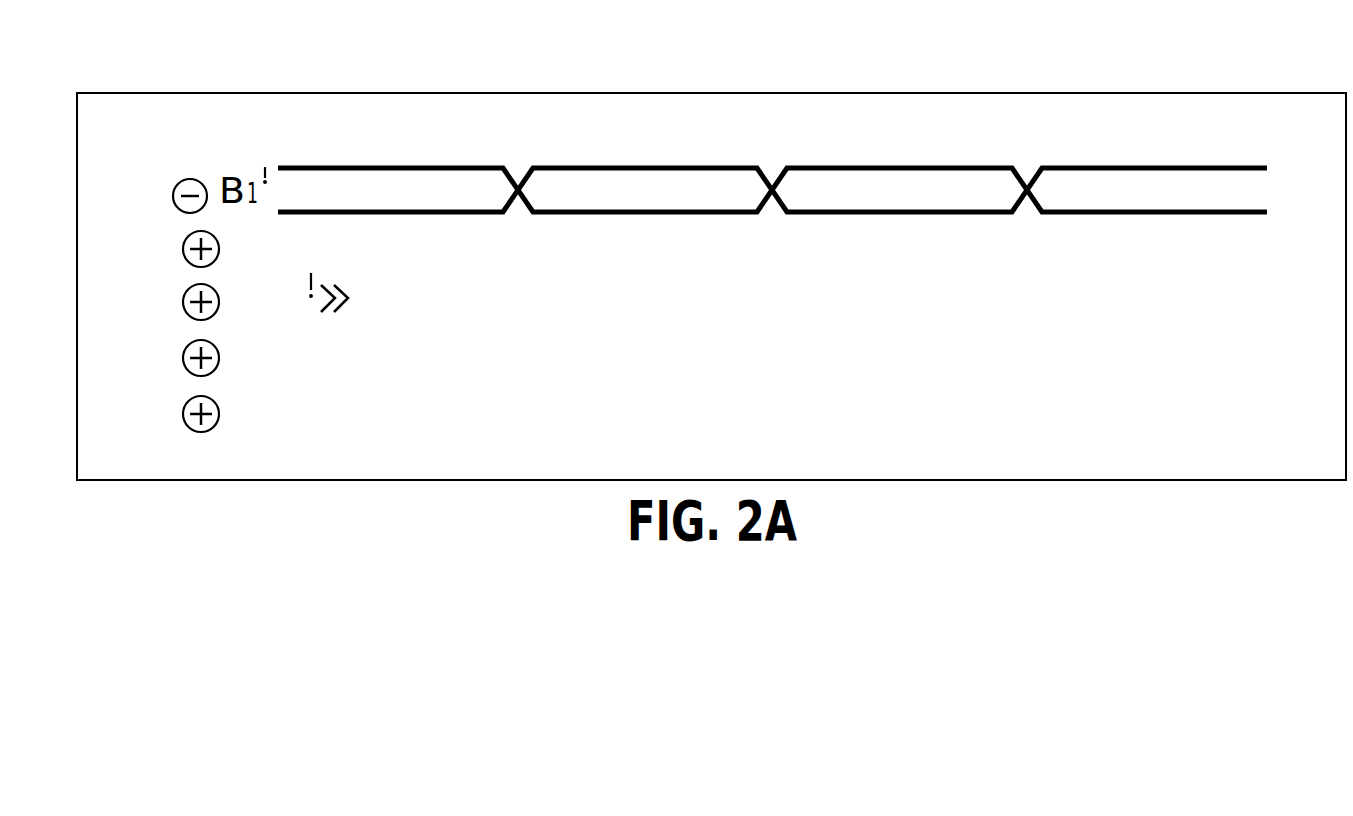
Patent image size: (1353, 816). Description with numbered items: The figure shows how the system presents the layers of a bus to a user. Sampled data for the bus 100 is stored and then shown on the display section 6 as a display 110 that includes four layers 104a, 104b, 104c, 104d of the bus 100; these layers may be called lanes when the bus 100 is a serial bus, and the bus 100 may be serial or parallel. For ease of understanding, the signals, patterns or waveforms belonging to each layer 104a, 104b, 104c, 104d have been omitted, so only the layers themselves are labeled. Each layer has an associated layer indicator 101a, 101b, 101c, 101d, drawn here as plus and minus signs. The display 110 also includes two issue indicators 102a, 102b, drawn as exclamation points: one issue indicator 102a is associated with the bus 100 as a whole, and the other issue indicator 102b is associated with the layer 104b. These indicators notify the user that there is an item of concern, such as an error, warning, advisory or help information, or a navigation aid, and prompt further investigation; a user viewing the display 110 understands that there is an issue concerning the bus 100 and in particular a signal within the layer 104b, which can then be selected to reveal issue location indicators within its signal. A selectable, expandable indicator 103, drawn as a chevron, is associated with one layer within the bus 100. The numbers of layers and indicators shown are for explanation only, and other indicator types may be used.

The display section 6 is at (1293, 91).
The bus 100 is at (901, 165).
The layer indicator 101a is at (182, 250).
The layer indicator 101b is at (182, 303).
The layer indicator 101c is at (182, 359).
The layer indicator 101d is at (182, 415).
The issue indicator 102a is at (264, 166).
The issue indicator 102b is at (314, 277).
The selectable, expandable indicator 103 is at (330, 315).
The layer 104a is at (310, 250).
The layer 104b is at (353, 303).
The layer 104c is at (310, 360).
The layer 104d is at (310, 416).
The display 110 is at (1115, 450).